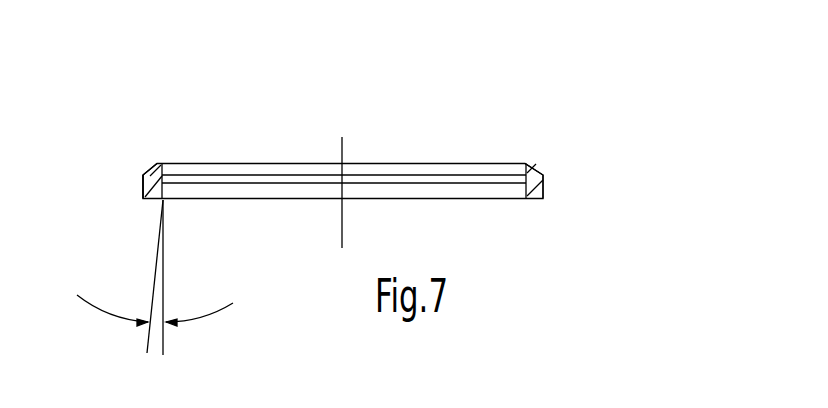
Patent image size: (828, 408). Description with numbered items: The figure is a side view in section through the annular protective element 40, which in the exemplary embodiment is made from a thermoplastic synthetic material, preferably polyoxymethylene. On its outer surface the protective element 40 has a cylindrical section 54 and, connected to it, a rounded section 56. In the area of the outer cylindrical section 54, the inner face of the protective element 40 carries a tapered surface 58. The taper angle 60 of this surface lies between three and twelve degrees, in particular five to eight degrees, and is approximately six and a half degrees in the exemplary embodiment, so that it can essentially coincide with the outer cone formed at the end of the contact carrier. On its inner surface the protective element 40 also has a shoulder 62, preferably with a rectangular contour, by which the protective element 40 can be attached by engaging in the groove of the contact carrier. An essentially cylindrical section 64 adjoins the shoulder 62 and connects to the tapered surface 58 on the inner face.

The protective element 40 is at (530, 110).
The cylindrical section 54 is at (142, 190).
The rounded section 56 is at (147, 168).
The tapered surface 58 is at (522, 193).
The taper angle 60 is at (202, 318).
The shoulder 62 is at (163, 177).
The cylindrical section 64 is at (523, 180).